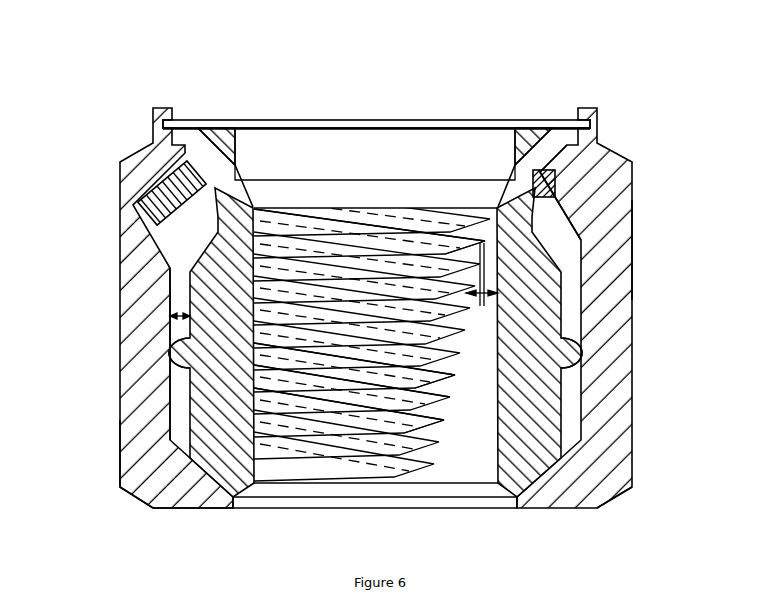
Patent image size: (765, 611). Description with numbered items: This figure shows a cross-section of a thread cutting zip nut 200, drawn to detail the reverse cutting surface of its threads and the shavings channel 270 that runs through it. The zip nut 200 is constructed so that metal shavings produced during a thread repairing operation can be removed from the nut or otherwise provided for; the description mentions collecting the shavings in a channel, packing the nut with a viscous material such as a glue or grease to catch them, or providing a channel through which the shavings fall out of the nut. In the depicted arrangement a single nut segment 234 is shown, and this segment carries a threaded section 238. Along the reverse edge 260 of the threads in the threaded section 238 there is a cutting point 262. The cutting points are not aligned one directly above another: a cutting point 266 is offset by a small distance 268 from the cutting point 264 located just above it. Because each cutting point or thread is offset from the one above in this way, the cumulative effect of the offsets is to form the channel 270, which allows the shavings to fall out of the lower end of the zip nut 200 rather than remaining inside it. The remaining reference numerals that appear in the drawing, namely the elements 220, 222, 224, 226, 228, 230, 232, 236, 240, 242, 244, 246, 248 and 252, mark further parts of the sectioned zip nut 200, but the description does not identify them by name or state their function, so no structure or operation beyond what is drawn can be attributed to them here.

The thread cutting zip nut 200 is at (559, 94).
The outer body 220 is at (620, 232).
The inner sleeve 222 is at (186, 268).
The lower body portion 224 is at (188, 458).
The groove 226 is at (553, 187).
The outer wall 228 is at (618, 245).
The inner wall 230 is at (168, 297).
The gap 232 is at (160, 312).
The nut segment 234 is at (187, 263).
The recess 236 is at (555, 362).
The threaded section 238 is at (330, 392).
The top plate 240 is at (541, 193).
The bottom wall 242 is at (520, 465).
The chamfer 244 is at (548, 482).
The key 246 is at (575, 198).
The recess 248 is at (207, 354).
The locking pin 252 is at (188, 182).
The reverse edge 260 is at (425, 423).
The cutting point 262 is at (430, 382).
The cutting point 264 is at (467, 243).
The cutting point 266 is at (485, 268).
The small distance 268 is at (498, 293).
The channel 270 is at (480, 352).